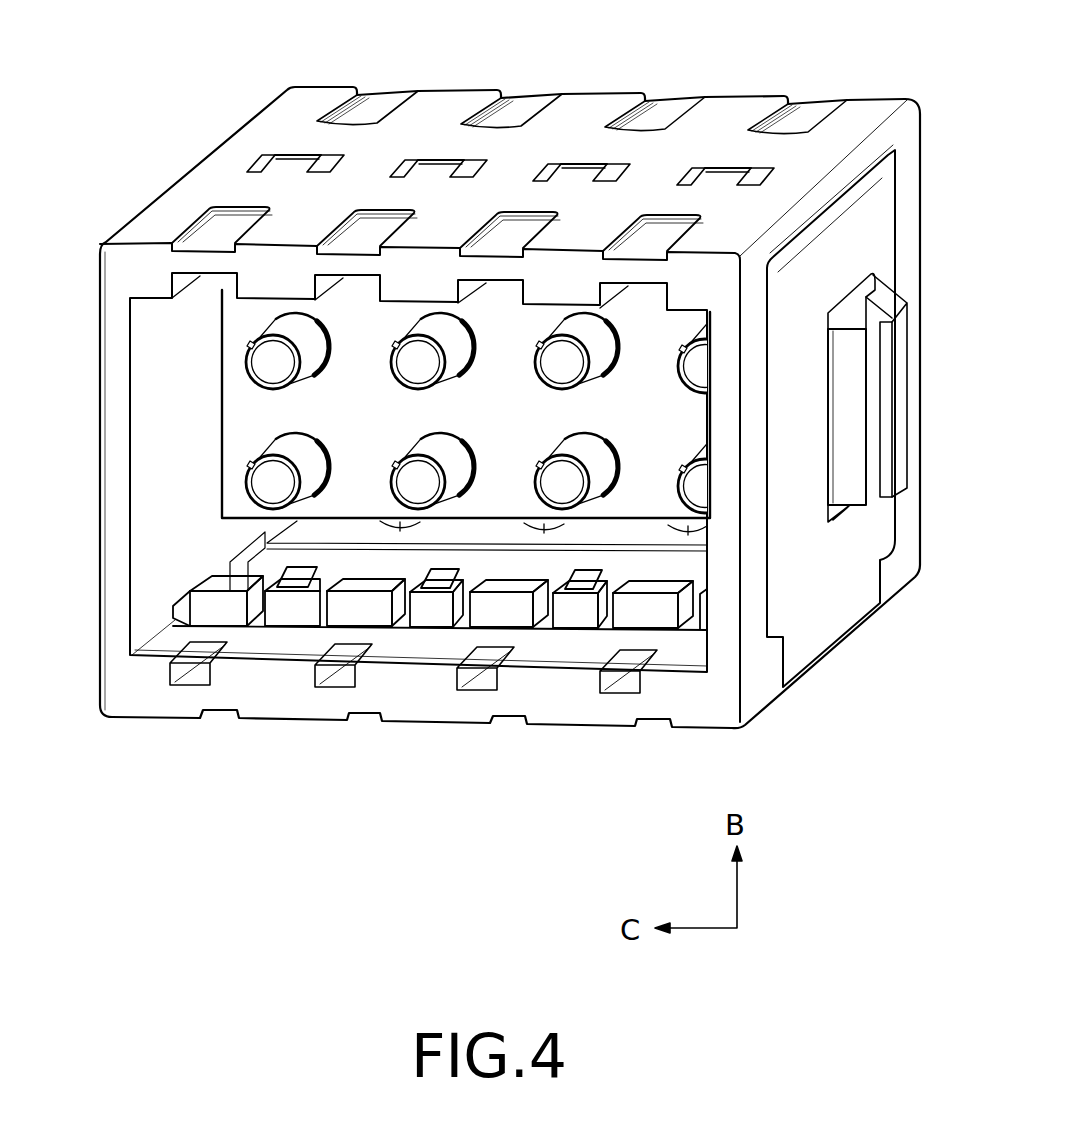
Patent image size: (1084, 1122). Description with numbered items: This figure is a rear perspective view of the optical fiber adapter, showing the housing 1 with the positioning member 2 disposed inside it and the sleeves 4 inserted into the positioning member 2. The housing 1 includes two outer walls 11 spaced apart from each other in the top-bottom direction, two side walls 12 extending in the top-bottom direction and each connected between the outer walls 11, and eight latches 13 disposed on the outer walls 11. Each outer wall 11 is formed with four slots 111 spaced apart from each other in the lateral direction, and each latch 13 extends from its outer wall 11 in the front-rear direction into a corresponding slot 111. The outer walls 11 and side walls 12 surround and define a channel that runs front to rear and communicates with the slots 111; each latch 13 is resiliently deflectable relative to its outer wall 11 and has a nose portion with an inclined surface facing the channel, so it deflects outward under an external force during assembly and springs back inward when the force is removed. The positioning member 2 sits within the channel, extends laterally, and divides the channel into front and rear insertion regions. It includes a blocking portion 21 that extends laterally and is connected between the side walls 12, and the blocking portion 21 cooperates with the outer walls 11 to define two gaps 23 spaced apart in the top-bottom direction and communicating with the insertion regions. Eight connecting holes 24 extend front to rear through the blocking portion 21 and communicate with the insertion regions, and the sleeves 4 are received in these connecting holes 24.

The housing 1 is at (172, 164).
The outer walls 11 is at (430, 108).
The slots 111 is at (253, 162).
The side walls 12 is at (912, 165).
The latches 13 is at (292, 158).
The positioning member 2 is at (404, 559).
The blocking portion 21 is at (237, 437).
The gaps 23 is at (430, 540).
The connecting holes 24 is at (313, 350).
The sleeves 4 is at (404, 412).